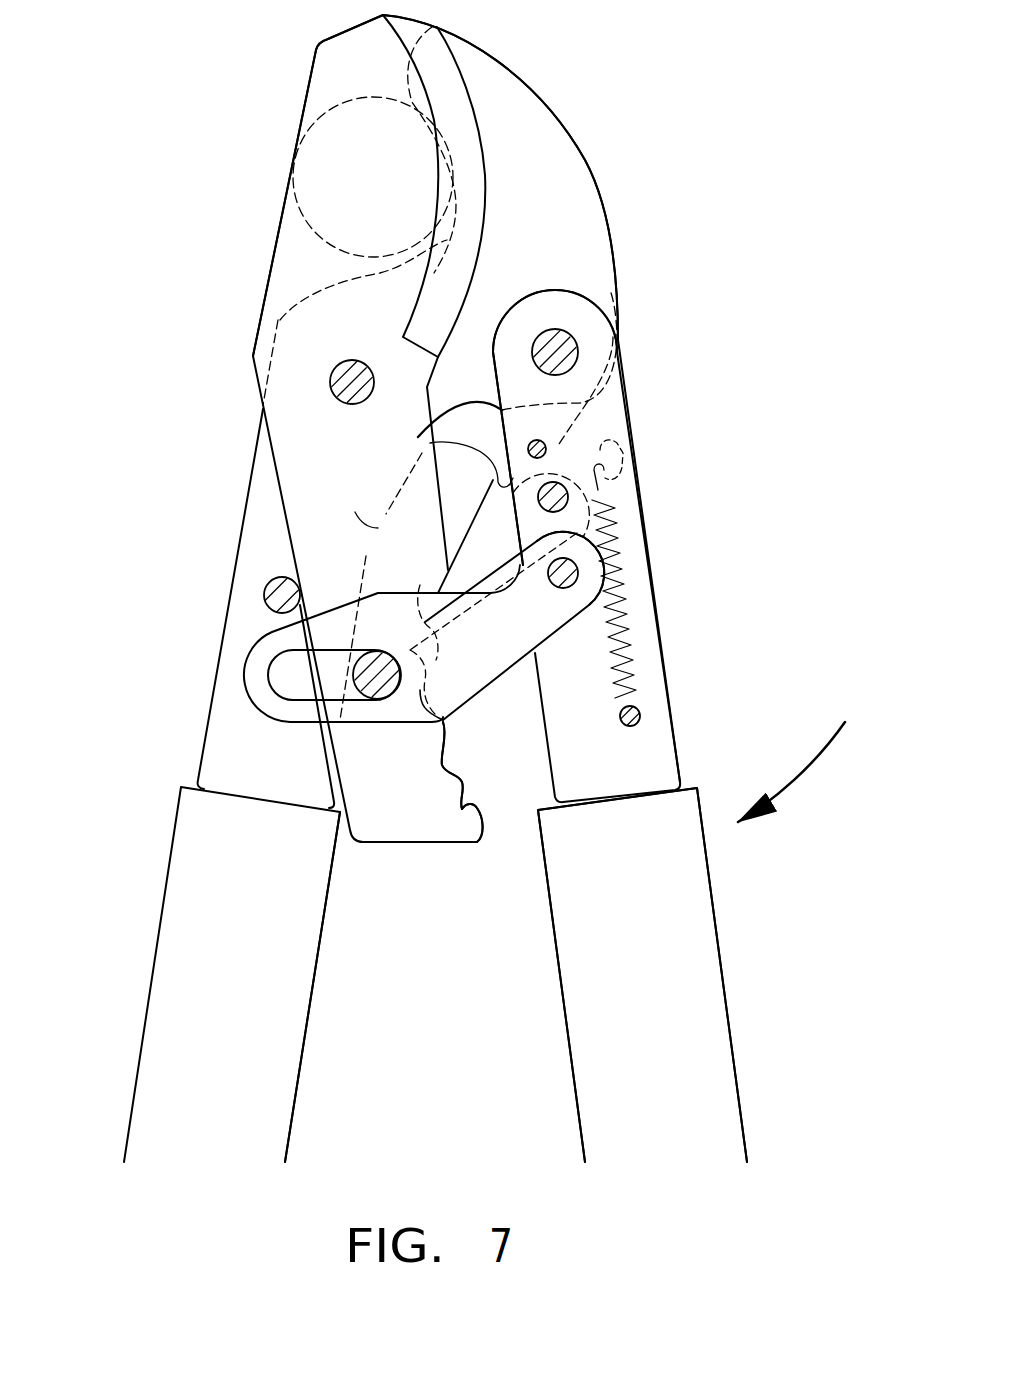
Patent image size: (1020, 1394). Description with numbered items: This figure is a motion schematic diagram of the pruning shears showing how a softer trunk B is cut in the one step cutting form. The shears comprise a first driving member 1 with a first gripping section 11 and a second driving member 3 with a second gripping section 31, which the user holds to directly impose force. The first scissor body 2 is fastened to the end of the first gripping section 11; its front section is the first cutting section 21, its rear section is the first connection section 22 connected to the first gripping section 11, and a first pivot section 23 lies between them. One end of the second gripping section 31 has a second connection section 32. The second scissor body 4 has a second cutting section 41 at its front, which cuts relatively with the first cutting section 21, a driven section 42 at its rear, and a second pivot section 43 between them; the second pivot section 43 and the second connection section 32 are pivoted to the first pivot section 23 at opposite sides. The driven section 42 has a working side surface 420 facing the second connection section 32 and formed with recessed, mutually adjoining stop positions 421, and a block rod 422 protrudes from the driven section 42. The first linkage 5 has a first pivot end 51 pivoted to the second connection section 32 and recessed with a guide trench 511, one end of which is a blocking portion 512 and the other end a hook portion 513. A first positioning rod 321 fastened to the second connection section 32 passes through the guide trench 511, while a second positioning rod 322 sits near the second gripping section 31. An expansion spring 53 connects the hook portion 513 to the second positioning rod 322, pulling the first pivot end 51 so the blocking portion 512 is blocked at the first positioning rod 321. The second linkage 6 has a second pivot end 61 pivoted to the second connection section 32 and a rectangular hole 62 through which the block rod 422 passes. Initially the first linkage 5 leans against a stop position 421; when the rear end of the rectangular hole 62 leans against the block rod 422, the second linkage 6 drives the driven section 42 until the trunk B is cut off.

The first driving member 1 is at (160, 858).
The first gripping section 11 is at (307, 967).
The first scissor body 2 is at (617, 180).
The first cutting section 21 is at (522, 90).
The first connection section 22 is at (222, 732).
The first pivot section 23 is at (372, 520).
The second driving member 3 is at (540, 1055).
The second gripping section 31 is at (583, 1082).
The second connection section 32 is at (618, 777).
The first positioning rod 321 is at (529, 444).
The second positioning rod 322 is at (641, 717).
The second scissor body 4 is at (257, 269).
The second cutting section 41 is at (310, 90).
The driven section 42 is at (403, 830).
The working side surface 420 is at (483, 795).
The stop position 421 is at (474, 805).
The block rod 422 is at (362, 679).
The second pivot section 43 is at (272, 452).
The first linkage 5 is at (482, 540).
The first pivot end 51 is at (568, 454).
The guide trench 511 is at (613, 337).
The blocking portion 512 is at (432, 440).
The hook portion 513 is at (620, 455).
The expansion spring 53 is at (626, 680).
The second linkage 6 is at (510, 647).
The second pivot end 61 is at (604, 580).
The rectangular hole 62 is at (275, 668).
The trunk B is at (305, 160).